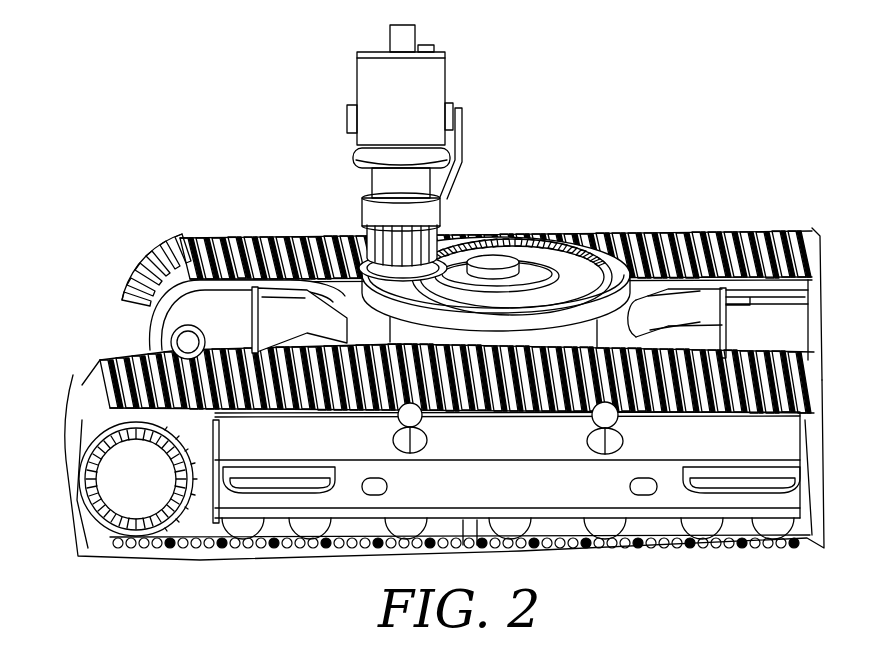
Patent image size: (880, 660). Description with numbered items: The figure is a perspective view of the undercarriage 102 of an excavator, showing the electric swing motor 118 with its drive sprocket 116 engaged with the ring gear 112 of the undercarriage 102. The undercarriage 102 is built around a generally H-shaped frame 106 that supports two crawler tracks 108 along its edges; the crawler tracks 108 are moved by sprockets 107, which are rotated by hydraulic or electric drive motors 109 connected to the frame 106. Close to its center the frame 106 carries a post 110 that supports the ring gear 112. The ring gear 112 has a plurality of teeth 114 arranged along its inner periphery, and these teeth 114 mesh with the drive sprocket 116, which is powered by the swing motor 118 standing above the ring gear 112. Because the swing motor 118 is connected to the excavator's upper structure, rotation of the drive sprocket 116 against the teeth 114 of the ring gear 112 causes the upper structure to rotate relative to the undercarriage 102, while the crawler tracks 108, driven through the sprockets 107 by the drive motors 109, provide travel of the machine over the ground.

The undercarriage 102 is at (673, 129).
The frame 106 is at (715, 310).
The sprockets 107 is at (205, 535).
The crawler tracks 108 is at (776, 246).
The drive motors 109 is at (113, 479).
The post 110 is at (640, 316).
The ring gear 112 is at (614, 230).
The teeth 114 is at (548, 232).
The drive sprocket 116 is at (397, 287).
The swing motor 118 is at (435, 78).